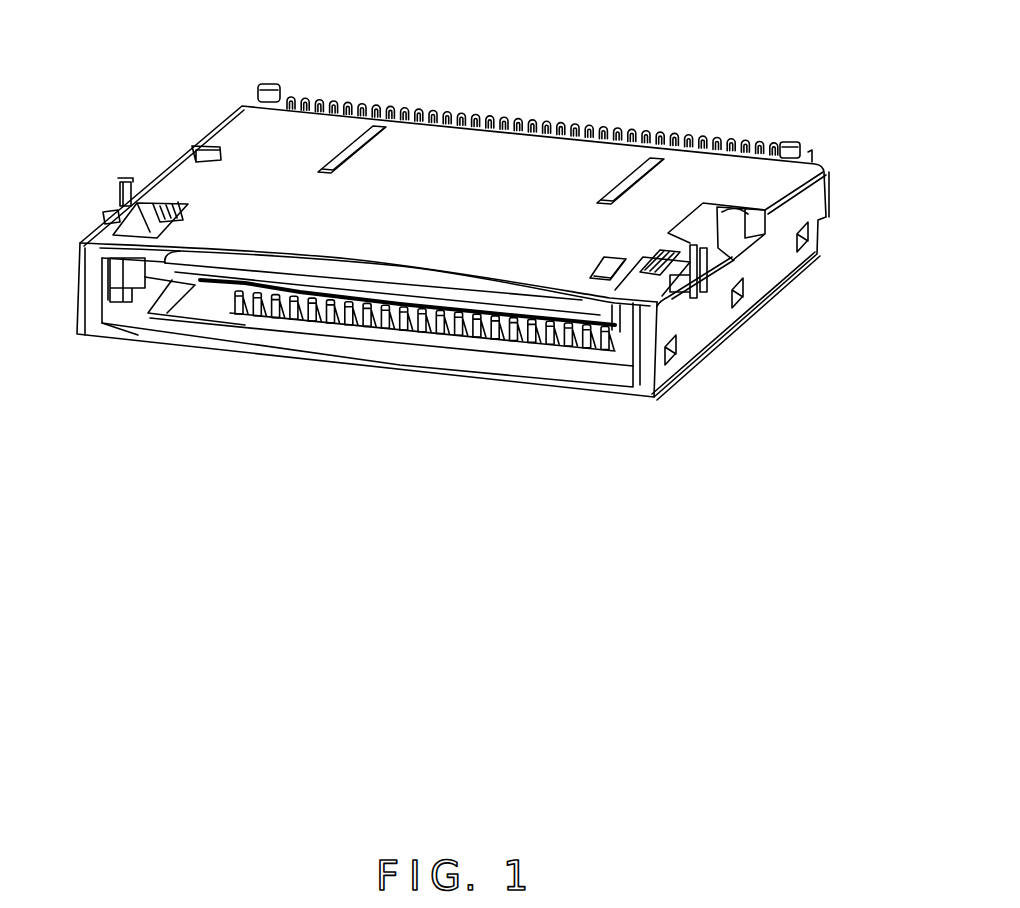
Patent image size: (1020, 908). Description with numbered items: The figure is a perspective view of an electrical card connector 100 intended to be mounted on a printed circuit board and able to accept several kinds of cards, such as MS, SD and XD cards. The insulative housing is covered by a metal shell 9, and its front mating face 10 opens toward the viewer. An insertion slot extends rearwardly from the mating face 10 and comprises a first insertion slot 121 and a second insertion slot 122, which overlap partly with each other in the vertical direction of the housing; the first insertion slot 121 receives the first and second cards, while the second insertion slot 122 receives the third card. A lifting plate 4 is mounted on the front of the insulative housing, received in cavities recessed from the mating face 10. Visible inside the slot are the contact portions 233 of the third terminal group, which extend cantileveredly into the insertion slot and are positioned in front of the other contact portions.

The electrical card connector 100 is at (585, 92).
The metal shell 9 is at (468, 170).
The front mating face 10 is at (93, 293).
The first insertion slot 121 is at (278, 257).
The second insertion slot 122 is at (178, 280).
The contact portions 233 is at (343, 305).
The lifting plate 4 is at (476, 297).